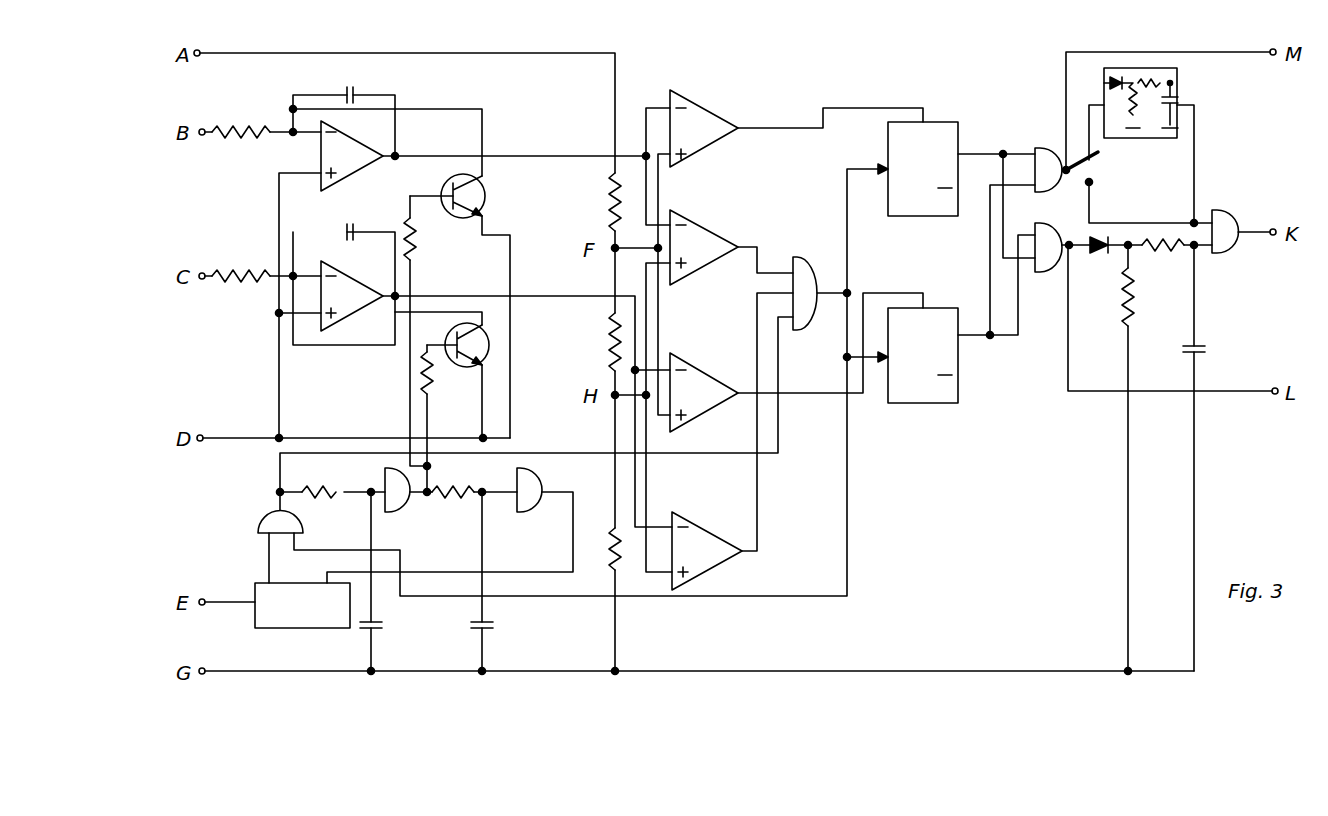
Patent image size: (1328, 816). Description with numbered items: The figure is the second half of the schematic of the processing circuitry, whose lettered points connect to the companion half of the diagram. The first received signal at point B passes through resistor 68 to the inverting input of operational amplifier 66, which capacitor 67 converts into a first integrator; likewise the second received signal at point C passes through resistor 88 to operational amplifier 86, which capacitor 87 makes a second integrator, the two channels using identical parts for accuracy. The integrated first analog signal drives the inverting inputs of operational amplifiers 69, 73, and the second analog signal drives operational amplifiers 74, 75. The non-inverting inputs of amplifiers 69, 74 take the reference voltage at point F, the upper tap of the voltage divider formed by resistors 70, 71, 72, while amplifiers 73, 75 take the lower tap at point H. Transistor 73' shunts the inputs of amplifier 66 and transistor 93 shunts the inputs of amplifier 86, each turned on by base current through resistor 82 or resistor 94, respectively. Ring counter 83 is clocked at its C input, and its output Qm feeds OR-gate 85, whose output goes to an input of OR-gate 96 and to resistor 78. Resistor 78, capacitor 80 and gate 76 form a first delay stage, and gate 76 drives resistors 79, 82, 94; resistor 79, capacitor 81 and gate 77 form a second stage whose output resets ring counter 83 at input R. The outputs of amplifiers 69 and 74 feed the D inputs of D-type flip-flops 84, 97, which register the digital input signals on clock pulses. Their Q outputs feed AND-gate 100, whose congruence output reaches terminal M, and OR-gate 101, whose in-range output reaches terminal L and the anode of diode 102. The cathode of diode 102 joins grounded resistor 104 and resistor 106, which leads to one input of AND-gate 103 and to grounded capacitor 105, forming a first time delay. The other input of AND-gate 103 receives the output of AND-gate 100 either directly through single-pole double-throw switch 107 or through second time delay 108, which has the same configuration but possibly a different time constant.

The operational amplifier 66 is at (350, 150).
The capacitor 67 is at (348, 90).
The resistor 68 is at (246, 142).
The operational amplifier 69 is at (710, 118).
The resistor 70 is at (608, 202).
The resistor 71 is at (608, 328).
The resistor 72 is at (608, 547).
The operational amplifier 73 is at (704, 236).
The transistor 73' is at (485, 196).
The operational amplifier 74 is at (701, 394).
The operational amplifier 75 is at (704, 536).
The gate 76 is at (385, 482).
The gate 77 is at (538, 481).
The resistor 78 is at (321, 490).
The resistor 79 is at (468, 490).
The capacitor 80 is at (381, 630).
The capacitor 81 is at (491, 630).
The resistor 82 is at (416, 238).
The ring counter 83 is at (270, 626).
The flip-flop 84 is at (953, 124).
The OR-gate 85 is at (262, 526).
The operational amplifier 86 is at (354, 292).
The capacitor 87 is at (350, 220).
The resistor 88 is at (248, 275).
The transistor 93 is at (447, 330).
The resistor 94 is at (420, 378).
The OR-gate 96 is at (801, 258).
The flip-flop 97 is at (942, 312).
The AND-gate 100 is at (1052, 146).
The OR-gate 101 is at (1046, 272).
The diode 102 is at (1100, 254).
The AND-gate 103 is at (1246, 200).
The resistor 104 is at (1120, 317).
The capacitor 105 is at (1184, 350).
The resistor 106 is at (1166, 254).
The single-pole double-throw switch 107 is at (1090, 184).
The second time delay 108 is at (1168, 68).